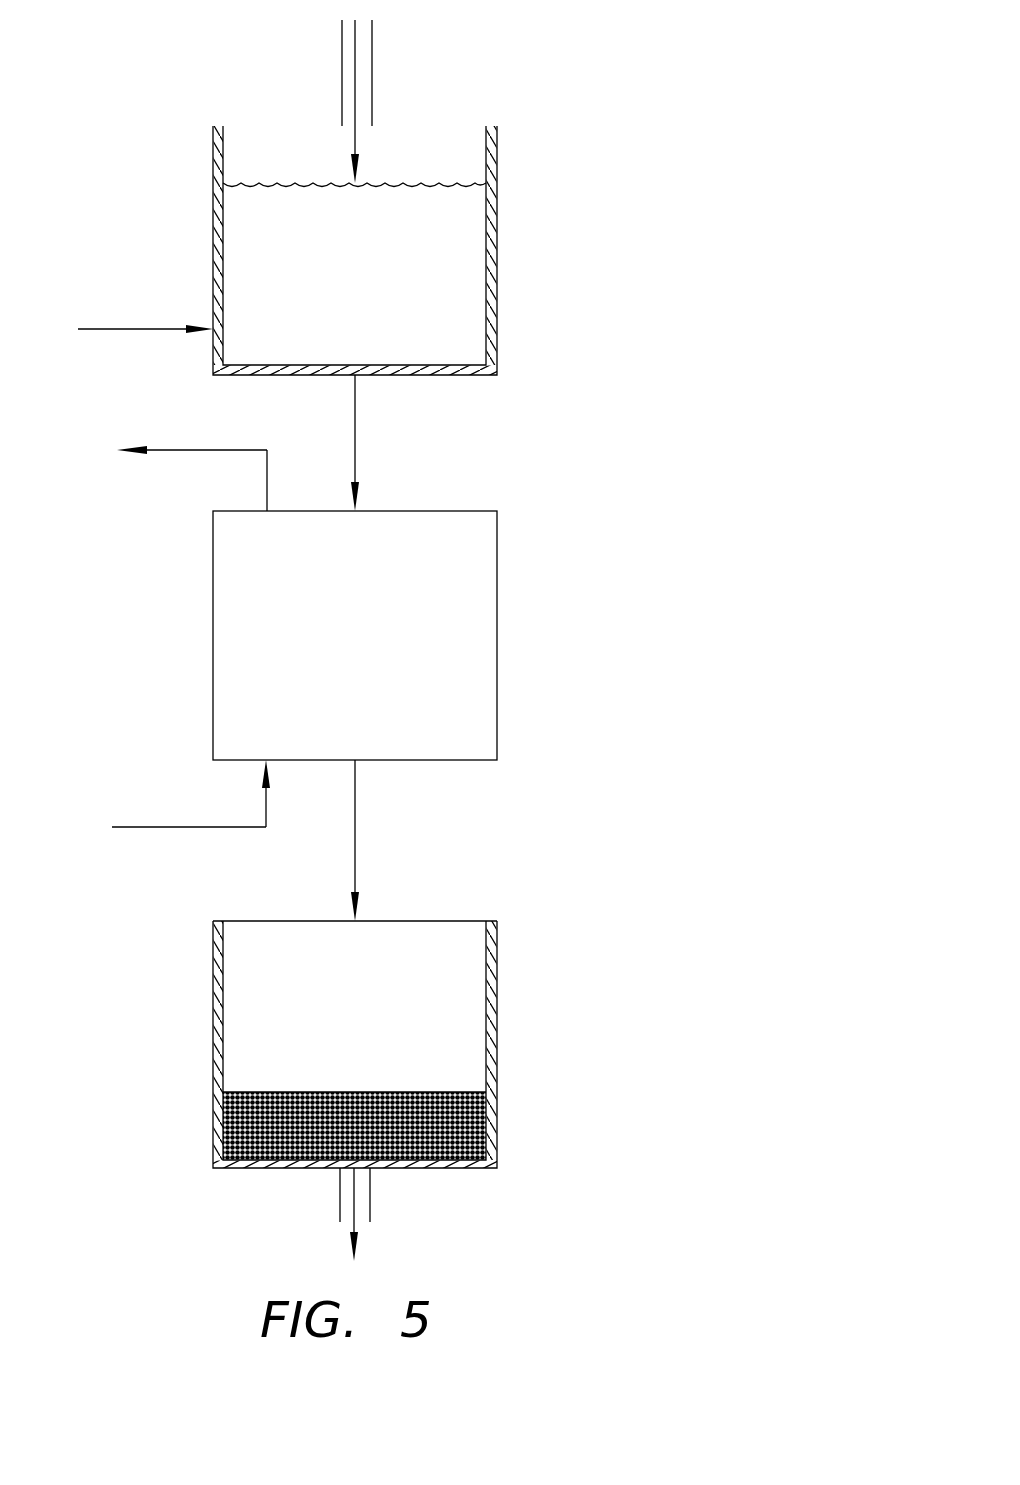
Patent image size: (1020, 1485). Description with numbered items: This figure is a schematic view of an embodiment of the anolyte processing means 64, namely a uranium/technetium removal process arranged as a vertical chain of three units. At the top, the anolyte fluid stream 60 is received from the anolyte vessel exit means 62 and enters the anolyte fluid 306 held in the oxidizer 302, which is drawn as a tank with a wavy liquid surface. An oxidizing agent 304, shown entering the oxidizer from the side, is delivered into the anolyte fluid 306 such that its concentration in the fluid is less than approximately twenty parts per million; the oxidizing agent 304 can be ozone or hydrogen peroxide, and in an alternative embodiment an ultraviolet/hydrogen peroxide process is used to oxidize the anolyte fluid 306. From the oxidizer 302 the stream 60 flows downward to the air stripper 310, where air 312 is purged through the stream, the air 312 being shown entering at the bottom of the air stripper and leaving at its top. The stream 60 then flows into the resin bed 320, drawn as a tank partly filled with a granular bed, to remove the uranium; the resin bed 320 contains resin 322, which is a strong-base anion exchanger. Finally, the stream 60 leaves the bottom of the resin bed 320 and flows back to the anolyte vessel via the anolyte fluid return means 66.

The anolyte fluid stream 60 is at (357, 77).
The anolyte vessel exit means 62 is at (341, 47).
The anolyte processing means 64 is at (748, 58).
The anolyte fluid return means 66 is at (370, 1202).
The oxidizer 302 is at (497, 246).
The oxidizing agent 304 is at (145, 315).
The anolyte fluid 306 is at (383, 182).
The air stripper 310 is at (497, 542).
The air 312 is at (215, 451).
The resin bed 320 is at (497, 975).
The resin 322 is at (440, 1090).